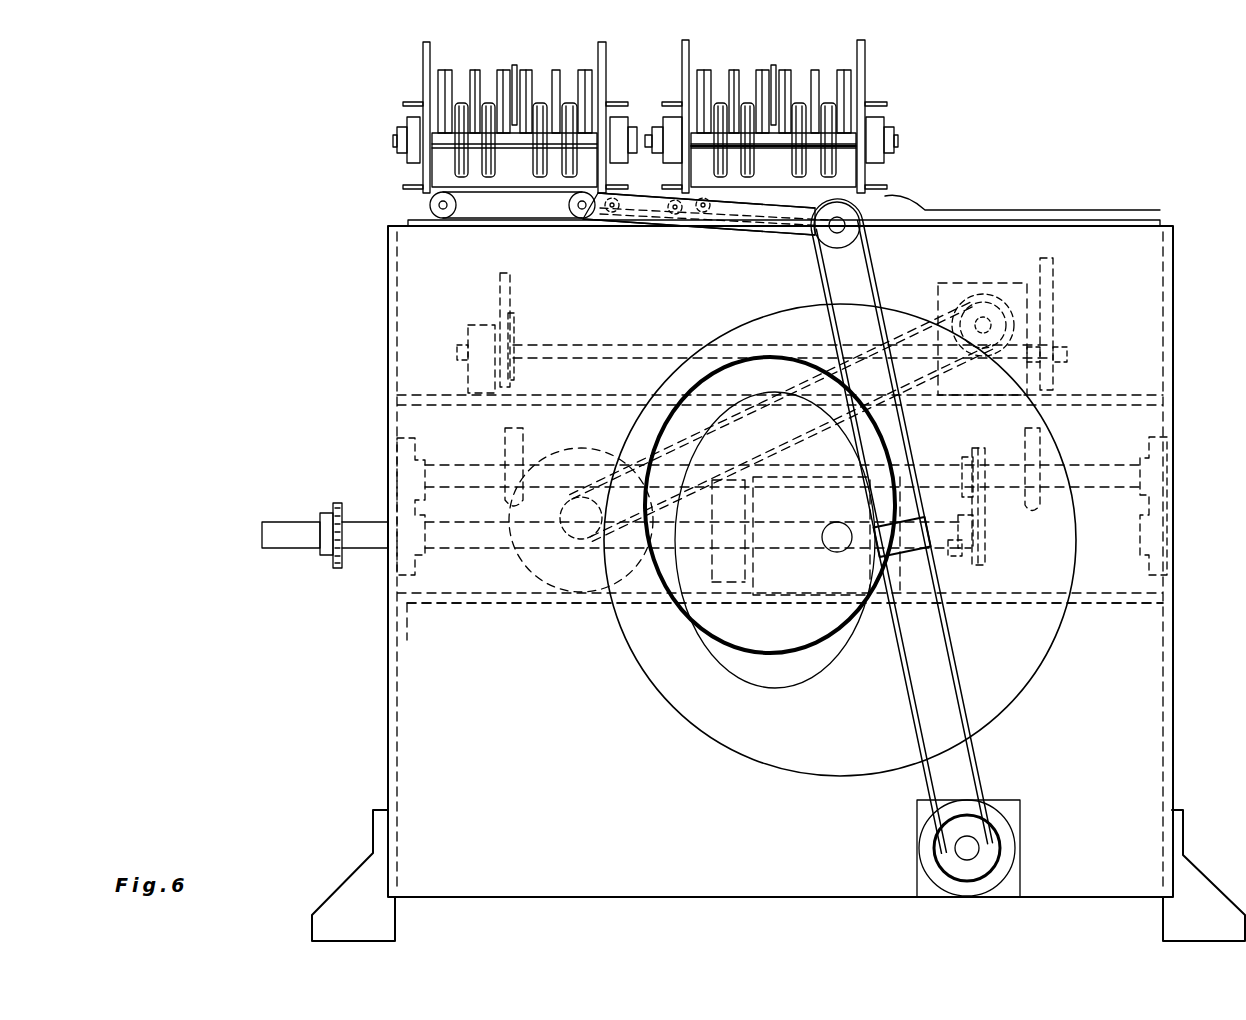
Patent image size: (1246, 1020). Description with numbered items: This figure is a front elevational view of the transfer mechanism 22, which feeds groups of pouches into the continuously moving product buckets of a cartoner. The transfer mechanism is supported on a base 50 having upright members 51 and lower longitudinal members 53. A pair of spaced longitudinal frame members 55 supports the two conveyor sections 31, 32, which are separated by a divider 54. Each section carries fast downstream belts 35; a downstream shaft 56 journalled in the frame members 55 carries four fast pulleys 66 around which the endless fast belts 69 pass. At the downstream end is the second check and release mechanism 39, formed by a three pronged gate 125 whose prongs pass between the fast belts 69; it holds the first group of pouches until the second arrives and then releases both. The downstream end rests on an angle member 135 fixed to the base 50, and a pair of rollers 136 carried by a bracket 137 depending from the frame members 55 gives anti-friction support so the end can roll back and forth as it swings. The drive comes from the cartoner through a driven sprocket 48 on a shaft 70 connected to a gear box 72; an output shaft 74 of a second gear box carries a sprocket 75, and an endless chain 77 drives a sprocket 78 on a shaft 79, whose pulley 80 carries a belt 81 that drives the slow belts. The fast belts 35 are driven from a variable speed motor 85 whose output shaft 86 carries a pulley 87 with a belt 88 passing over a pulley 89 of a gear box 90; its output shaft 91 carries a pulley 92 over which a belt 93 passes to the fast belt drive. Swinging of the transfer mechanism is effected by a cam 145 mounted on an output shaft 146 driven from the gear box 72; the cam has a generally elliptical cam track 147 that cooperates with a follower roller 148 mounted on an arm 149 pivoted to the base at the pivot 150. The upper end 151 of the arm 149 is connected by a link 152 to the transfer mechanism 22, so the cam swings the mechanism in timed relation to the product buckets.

The transfer mechanism 22 is at (220, 276).
The conveyor section 31 is at (556, 68).
The conveyor section 32 is at (470, 68).
The downstream belts 35 is at (480, 178).
The second check and release mechanism 39 is at (427, 80).
The driven sprocket 48 is at (337, 570).
The base 50 is at (1140, 220).
The upright members 51 is at (405, 748).
The lower longitudinal members 53 is at (525, 605).
The divider 54 is at (514, 64).
The longitudinal frame members 55 is at (408, 104).
The downstream shaft 56 is at (648, 150).
The fast pulleys 66 is at (560, 148).
The fast belts 69 is at (725, 180).
The shaft 70 is at (462, 555).
The gear box 72 is at (765, 590).
The output shaft 74 is at (950, 560).
The sprocket 75 is at (985, 538).
The endless chain 77 is at (985, 508).
The sprocket 78 is at (970, 458).
The shaft 79 is at (450, 465).
The pulley 80 is at (505, 487).
The belt 81 is at (525, 430).
The variable speed motor 85 is at (570, 452).
The output shaft 86 is at (575, 505).
The pulley 87 is at (640, 460).
The belt 88 is at (740, 455).
The pulley 89 is at (985, 300).
The gear box 90 is at (950, 283).
The output shaft 91 is at (545, 345).
The pulley 92 is at (518, 320).
The belt 93 is at (515, 280).
The three pronged gate 125 is at (585, 78).
The angle member 135 is at (960, 205).
The rollers 136 is at (442, 220).
The bracket 137 is at (515, 210).
The cam 145 is at (840, 540).
The output shaft 146 is at (830, 548).
The cam track 147 is at (738, 672).
The follower roller 148 is at (915, 570).
The arm 149 is at (972, 673).
The pivot 150 is at (968, 840).
The upper end 151 is at (855, 232).
The link 152 is at (755, 240).